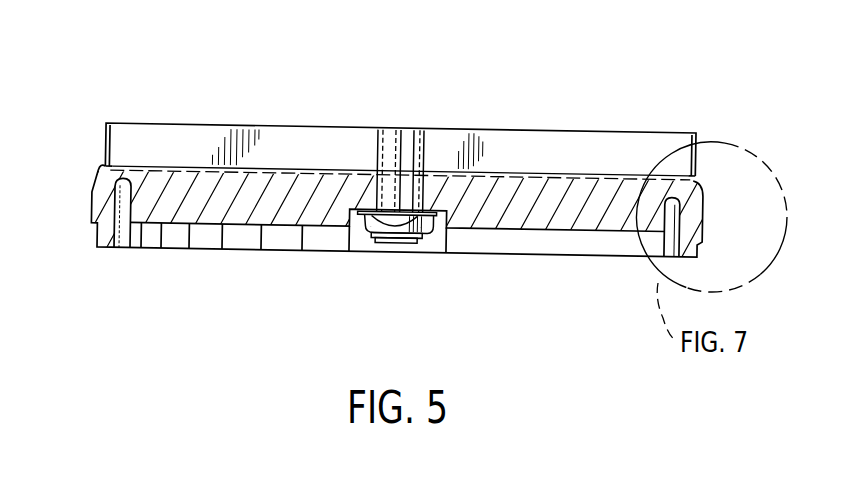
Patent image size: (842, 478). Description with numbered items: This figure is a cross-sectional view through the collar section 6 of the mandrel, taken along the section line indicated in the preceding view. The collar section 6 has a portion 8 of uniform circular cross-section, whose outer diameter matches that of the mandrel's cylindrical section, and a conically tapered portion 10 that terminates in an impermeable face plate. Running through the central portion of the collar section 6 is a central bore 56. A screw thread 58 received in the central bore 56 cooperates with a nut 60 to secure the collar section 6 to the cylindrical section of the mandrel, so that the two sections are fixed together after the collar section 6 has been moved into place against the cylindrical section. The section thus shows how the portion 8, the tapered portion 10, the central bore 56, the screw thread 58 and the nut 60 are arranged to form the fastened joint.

The collar section 6 is at (172, 110).
The portion of uniform circular cross-section 8 is at (94, 217).
The conically tapered portion 10 is at (95, 178).
The central bore 56 is at (390, 127).
The screw thread 58 is at (413, 155).
The nut 60 is at (398, 233).